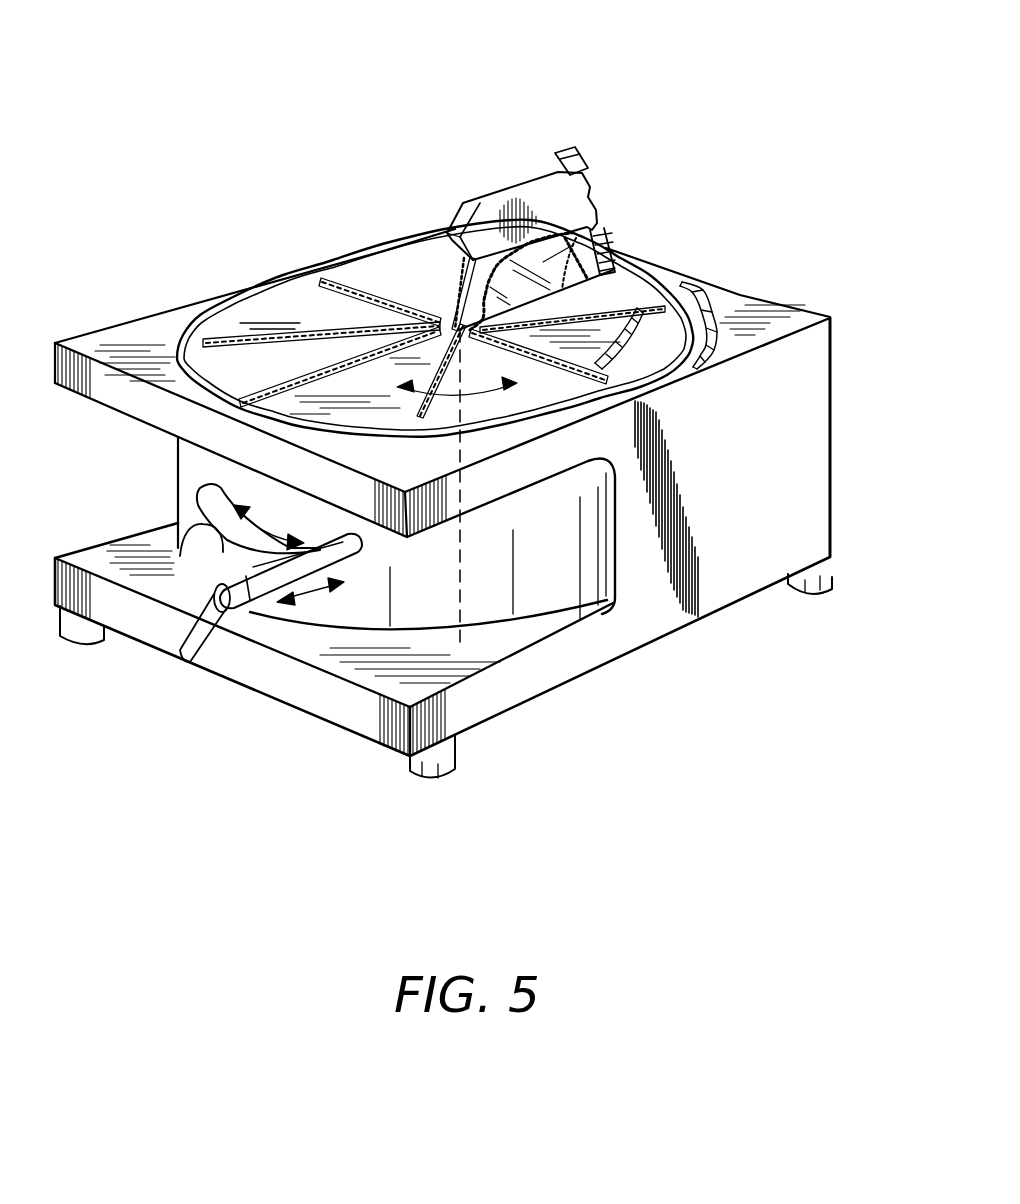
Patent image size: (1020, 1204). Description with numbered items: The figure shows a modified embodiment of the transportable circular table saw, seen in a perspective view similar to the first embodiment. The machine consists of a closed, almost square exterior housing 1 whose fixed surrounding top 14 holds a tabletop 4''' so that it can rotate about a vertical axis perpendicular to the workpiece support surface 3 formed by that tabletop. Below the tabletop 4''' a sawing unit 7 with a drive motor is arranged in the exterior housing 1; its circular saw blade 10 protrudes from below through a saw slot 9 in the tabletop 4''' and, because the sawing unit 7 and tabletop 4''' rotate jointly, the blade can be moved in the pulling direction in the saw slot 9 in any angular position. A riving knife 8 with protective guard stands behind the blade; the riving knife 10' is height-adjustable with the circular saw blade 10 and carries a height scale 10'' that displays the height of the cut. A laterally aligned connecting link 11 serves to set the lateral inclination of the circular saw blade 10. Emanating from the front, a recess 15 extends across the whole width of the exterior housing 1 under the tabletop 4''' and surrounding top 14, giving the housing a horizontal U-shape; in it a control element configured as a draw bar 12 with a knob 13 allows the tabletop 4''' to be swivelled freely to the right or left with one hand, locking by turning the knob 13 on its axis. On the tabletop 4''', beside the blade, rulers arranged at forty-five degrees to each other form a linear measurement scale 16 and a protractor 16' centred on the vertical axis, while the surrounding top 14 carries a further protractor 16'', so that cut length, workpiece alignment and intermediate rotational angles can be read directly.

The exterior housing 1 is at (404, 154).
The workpiece support surface 3 is at (342, 322).
The tabletop 4''' is at (273, 248).
The sawing unit 7 is at (608, 315).
The riving knife with protective guard 8 is at (560, 192).
The saw slot 9 is at (308, 377).
The circular saw blade 10 is at (567, 165).
The riving knife 10' is at (637, 197).
The height scale 10'' is at (636, 160).
The connecting link 11 is at (207, 507).
The draw bar 12 is at (273, 597).
The knob 13 is at (213, 532).
The surrounding top 14 is at (740, 323).
The recess 15 is at (502, 627).
The linear measurement scale 16 is at (368, 218).
The protractor 16' is at (714, 263).
The protractor 16'' is at (775, 280).